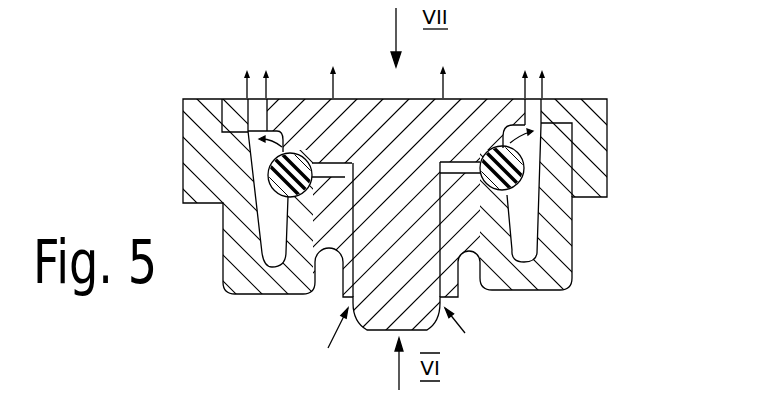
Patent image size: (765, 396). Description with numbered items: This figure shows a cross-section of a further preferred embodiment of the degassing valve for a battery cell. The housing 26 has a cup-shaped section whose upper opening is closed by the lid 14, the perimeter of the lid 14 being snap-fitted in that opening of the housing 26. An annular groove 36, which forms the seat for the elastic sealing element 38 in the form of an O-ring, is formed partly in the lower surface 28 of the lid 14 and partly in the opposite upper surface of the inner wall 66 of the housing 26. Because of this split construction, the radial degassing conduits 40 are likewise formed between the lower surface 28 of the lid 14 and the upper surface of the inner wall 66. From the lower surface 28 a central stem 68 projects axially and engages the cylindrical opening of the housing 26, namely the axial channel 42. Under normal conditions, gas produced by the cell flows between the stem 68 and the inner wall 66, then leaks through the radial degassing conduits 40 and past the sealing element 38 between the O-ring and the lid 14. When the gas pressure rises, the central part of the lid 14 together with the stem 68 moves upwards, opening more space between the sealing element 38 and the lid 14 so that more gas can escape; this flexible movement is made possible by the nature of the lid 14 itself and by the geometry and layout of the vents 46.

The lid 14 is at (557, 104).
The housing 26 is at (558, 269).
The lower surface 28 is at (445, 163).
The annular groove 36 is at (302, 158).
The elastic sealing element 38 is at (505, 168).
The radial degassing conduits 40 is at (333, 178).
The axial channel 42 is at (443, 297).
The vents 46 is at (243, 128).
The inner wall 66 is at (502, 213).
The central stem 68 is at (370, 268).